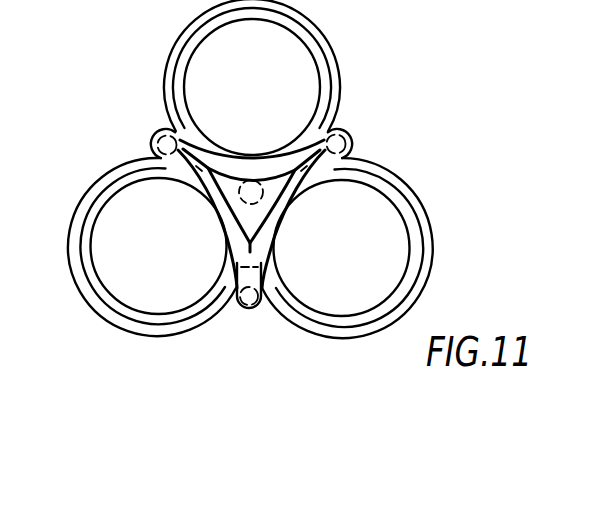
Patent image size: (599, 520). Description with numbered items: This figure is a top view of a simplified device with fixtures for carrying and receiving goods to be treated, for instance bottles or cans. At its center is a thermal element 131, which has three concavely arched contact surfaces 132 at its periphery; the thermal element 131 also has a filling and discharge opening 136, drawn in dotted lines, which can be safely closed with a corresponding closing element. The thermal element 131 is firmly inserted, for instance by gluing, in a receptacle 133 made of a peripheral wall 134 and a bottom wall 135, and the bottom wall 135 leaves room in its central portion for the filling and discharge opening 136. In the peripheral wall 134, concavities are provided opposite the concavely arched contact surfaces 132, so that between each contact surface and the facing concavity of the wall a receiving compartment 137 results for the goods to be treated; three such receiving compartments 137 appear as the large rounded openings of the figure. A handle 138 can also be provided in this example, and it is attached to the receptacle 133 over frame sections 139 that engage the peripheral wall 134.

The thermal element 131 is at (230, 178).
The concavely arched contact surfaces 132 is at (226, 146).
The receptacle 133 is at (451, 237).
The peripheral wall 134 is at (128, 164).
The bottom wall 135 is at (388, 262).
The filling and discharge opening 136 is at (242, 196).
The receiving compartments 137 is at (110, 213).
The handle 138 is at (231, 250).
The frame sections 139 is at (354, 137).